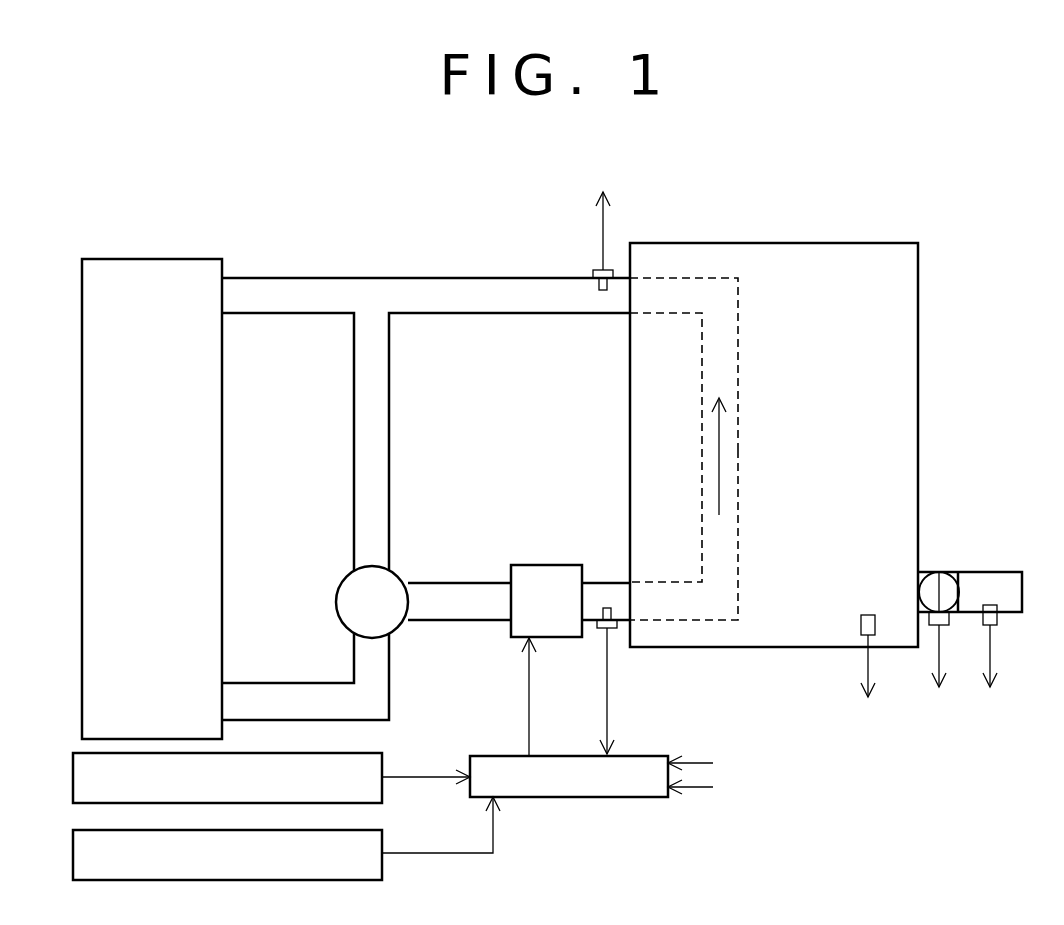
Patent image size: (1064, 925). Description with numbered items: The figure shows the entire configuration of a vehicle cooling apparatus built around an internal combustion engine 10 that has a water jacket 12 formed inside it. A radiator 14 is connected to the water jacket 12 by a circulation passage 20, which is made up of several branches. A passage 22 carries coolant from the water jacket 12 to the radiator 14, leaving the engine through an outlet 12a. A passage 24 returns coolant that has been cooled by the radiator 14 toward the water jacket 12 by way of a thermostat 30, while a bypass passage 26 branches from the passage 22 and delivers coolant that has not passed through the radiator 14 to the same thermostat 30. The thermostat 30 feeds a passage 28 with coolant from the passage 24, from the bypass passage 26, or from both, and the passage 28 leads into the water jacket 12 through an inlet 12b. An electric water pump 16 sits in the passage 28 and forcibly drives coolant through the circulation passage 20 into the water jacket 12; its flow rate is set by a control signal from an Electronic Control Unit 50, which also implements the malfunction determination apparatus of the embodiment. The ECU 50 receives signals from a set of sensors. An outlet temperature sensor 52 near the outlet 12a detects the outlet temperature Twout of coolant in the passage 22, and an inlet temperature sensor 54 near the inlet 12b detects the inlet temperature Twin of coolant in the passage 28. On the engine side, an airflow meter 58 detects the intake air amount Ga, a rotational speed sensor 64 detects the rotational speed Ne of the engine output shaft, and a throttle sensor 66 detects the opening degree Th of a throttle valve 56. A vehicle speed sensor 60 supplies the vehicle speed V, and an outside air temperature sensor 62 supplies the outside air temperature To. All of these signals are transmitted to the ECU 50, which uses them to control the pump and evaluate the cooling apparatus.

The internal combustion engine 10 is at (872, 243).
The water jacket 12 is at (738, 295).
The outlet 12a is at (683, 278).
The inlet 12b is at (675, 622).
The radiator 14 is at (138, 259).
The electric water pump 16 is at (562, 638).
The circulation passage 20 is at (406, 232).
The passage 22 is at (484, 278).
The passage 24 is at (389, 701).
The bypass passage 26 is at (354, 437).
The passage 28 is at (445, 620).
The thermostat 30 is at (336, 602).
The Electronic Control Unit (ECU) 50 is at (573, 798).
The outlet temperature sensor 52 is at (593, 275).
The inlet temperature sensor 54 is at (600, 630).
The throttle valve 56 is at (950, 574).
The airflow meter 58 is at (990, 627).
The vehicle speed sensor 60 is at (362, 750).
The outside air temperature sensor 62 is at (357, 826).
The rotational speed sensor 64 is at (868, 613).
The throttle sensor 66 is at (934, 628).